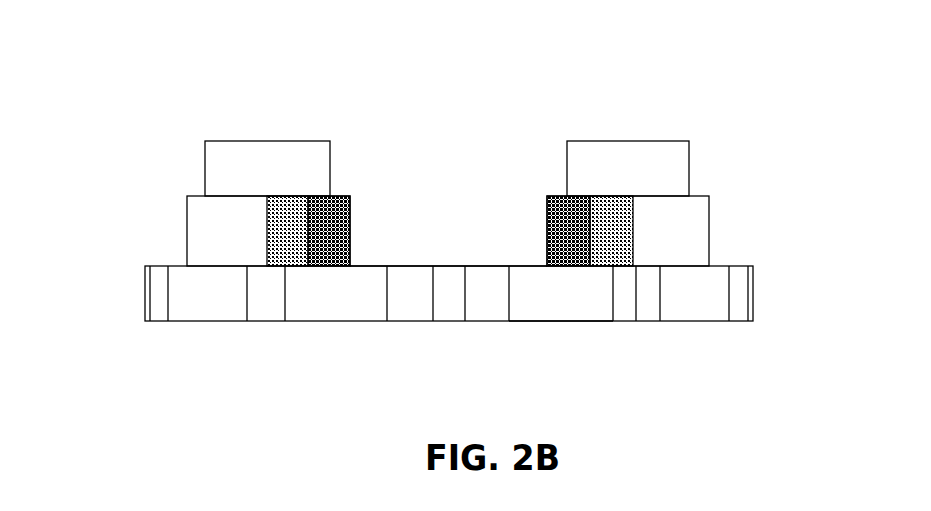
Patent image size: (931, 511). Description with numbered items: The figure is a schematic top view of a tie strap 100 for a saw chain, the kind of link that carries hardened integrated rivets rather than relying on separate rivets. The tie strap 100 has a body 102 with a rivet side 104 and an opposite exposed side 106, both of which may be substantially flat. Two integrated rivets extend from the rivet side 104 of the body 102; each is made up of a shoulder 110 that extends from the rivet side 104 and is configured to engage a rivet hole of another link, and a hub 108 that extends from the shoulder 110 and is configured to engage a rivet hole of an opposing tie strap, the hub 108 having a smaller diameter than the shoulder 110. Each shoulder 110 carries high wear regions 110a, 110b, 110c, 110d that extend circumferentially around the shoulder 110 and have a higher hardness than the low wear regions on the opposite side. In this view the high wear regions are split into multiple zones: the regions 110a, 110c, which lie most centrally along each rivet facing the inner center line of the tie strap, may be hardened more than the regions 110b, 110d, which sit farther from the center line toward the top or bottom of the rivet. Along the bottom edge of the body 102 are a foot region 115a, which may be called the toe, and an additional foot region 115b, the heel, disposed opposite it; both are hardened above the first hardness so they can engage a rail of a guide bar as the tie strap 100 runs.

The tie strap 100 is at (126, 85).
The body 102 is at (411, 290).
The rivet side 104 is at (477, 256).
The exposed side 106 is at (538, 346).
The hub 108 is at (223, 162).
The shoulder 110 is at (243, 235).
The high wear region 110a is at (560, 192).
The high wear region 110b is at (613, 193).
The high wear region 110c is at (330, 193).
The high wear region 110d is at (287, 193).
The foot region 115a is at (633, 293).
The additional foot region 115b is at (267, 297).